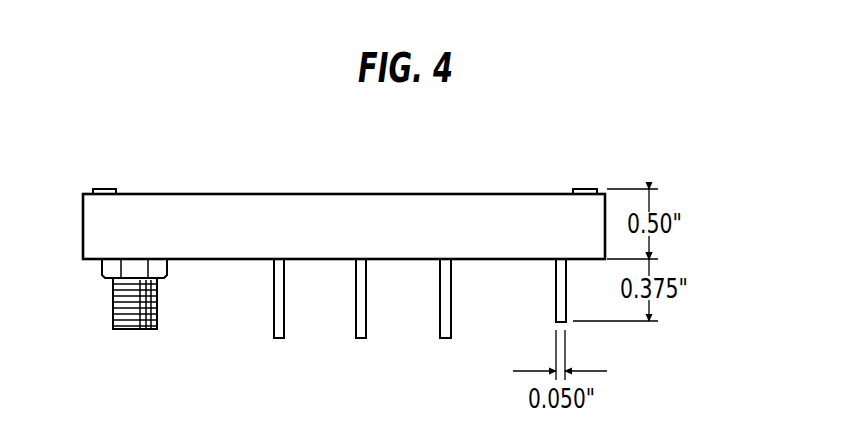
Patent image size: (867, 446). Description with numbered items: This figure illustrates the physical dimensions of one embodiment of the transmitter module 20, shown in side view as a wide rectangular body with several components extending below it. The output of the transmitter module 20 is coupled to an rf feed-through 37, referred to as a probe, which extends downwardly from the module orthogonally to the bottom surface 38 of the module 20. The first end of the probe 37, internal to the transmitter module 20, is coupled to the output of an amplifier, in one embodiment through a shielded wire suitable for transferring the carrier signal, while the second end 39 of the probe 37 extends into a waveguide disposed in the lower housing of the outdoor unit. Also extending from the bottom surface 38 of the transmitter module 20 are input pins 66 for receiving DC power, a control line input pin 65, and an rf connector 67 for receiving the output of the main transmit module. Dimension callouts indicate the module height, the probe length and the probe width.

The transmitter module 20 is at (344, 238).
The rf feed-through 37 is at (556, 306).
The bottom surface 38 is at (480, 260).
The second end 39 is at (556, 323).
The control line input pin 65 is at (277, 338).
The input pins 66 is at (445, 338).
The rf connector 67 is at (131, 329).